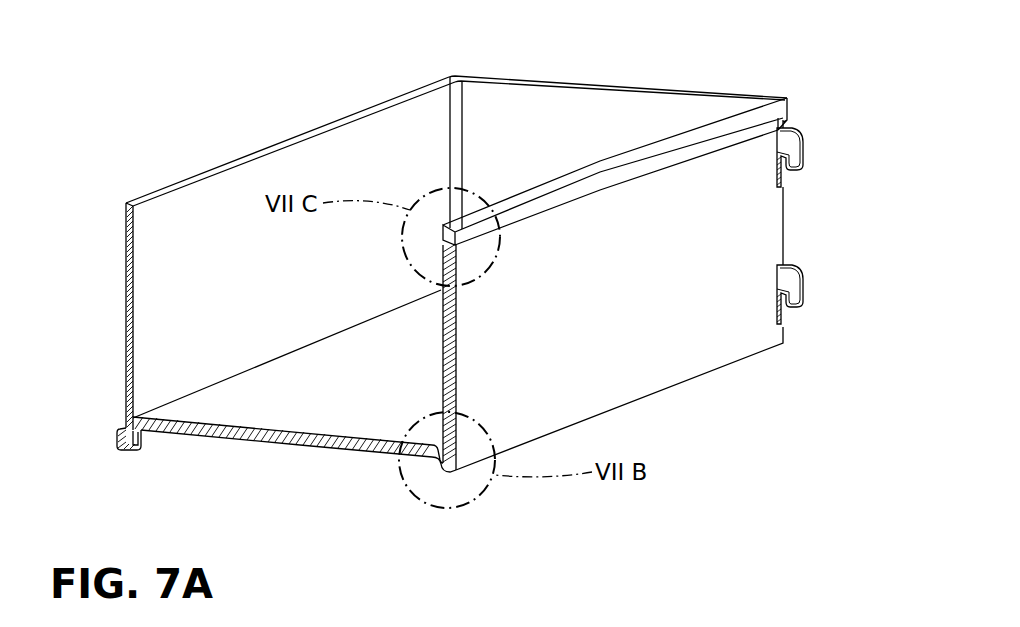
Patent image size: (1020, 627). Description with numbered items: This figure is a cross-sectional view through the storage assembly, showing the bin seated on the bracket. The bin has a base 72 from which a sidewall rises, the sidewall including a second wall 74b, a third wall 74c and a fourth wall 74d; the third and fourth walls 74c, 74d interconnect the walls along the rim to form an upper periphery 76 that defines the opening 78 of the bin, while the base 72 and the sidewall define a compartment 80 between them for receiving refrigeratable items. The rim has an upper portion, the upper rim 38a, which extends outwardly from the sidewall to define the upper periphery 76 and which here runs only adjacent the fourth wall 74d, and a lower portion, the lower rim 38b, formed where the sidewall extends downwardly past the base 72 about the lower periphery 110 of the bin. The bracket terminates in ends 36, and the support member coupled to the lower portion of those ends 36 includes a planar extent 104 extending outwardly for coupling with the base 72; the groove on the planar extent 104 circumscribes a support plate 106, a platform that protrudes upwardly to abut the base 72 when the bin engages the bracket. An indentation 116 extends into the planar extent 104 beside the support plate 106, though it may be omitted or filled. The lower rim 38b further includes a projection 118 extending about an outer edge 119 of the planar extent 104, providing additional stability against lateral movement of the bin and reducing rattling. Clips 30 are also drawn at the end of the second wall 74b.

The clip 30 is at (819, 150).
The ends of the bracket 36 is at (805, 100).
The upper rim 38a is at (684, 126).
The lower rim 38b is at (426, 471).
The base 72 is at (255, 420).
The second wall 74b is at (593, 132).
The third wall 74c is at (125, 290).
The fourth wall 74d is at (440, 322).
The upper periphery 76 is at (234, 161).
The opening 78 is at (357, 167).
The compartment 80 is at (410, 360).
The planar extent 104 is at (307, 463).
The support plate 106 is at (232, 434).
The lower periphery 110 is at (136, 452).
The indentation 116 is at (198, 431).
The projection 118 is at (118, 441).
The outer edge 119 is at (122, 426).